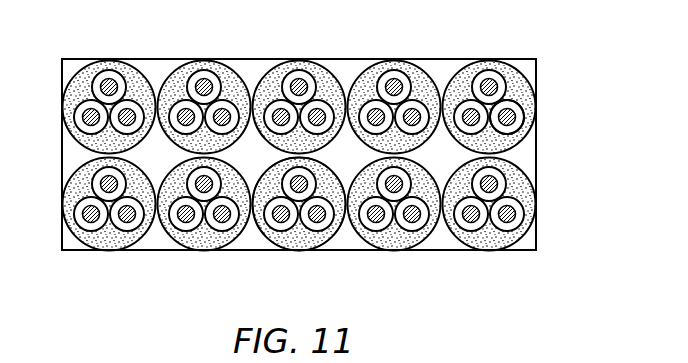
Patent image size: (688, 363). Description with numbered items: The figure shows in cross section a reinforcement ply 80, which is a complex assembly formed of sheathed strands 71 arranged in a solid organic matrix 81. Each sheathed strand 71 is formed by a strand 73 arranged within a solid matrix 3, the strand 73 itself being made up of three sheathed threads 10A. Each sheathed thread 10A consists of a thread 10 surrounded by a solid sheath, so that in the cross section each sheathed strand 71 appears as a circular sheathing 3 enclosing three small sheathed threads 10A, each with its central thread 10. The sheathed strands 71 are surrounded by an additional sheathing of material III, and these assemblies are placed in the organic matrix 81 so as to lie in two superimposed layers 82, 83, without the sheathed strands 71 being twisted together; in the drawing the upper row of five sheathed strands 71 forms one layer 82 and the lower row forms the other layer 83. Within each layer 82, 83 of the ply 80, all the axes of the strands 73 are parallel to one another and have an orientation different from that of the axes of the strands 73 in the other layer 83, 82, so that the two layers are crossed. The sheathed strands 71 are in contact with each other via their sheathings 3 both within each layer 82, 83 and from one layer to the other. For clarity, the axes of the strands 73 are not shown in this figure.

The ply 80 is at (486, 49).
The layer 82 is at (105, 58).
The solid matrix 3 is at (411, 75).
The sheathed thread 10A is at (503, 85).
The thread 10 is at (508, 118).
The material III is at (530, 147).
The solid organic matrix 81 is at (528, 162).
The layer 83 is at (99, 250).
The strand 73 is at (272, 230).
The sheathed strand 71 is at (299, 250).